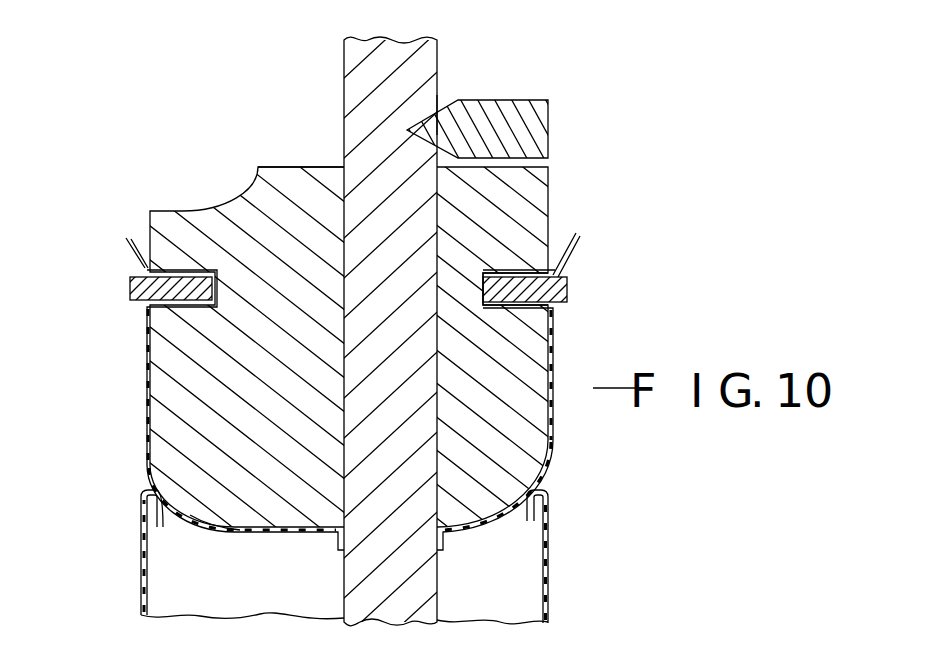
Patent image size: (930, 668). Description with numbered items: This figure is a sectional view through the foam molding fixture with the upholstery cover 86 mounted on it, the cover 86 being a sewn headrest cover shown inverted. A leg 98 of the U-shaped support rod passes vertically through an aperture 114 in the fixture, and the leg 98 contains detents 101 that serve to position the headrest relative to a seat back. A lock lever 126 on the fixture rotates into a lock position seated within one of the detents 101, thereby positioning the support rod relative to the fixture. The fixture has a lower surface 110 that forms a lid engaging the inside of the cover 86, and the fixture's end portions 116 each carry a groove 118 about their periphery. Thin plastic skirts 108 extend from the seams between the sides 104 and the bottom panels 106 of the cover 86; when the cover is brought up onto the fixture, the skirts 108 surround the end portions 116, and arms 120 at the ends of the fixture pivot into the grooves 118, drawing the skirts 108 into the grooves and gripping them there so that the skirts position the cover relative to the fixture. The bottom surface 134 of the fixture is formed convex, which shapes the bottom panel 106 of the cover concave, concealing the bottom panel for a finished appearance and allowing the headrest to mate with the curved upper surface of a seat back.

The upholstery cover 86 is at (552, 548).
The leg 98 is at (343, 75).
The detent 101 is at (437, 117).
The side 104 is at (141, 568).
The bottom panel 106 is at (253, 537).
The plastic skirt 108 is at (147, 412).
The lower surface 110 is at (212, 527).
The aperture 114 is at (343, 192).
The end portion 116 is at (525, 437).
The groove 118 is at (512, 270).
The arm 120 is at (130, 300).
The lock lever 126 is at (544, 108).
The bottom surface 134 is at (480, 520).